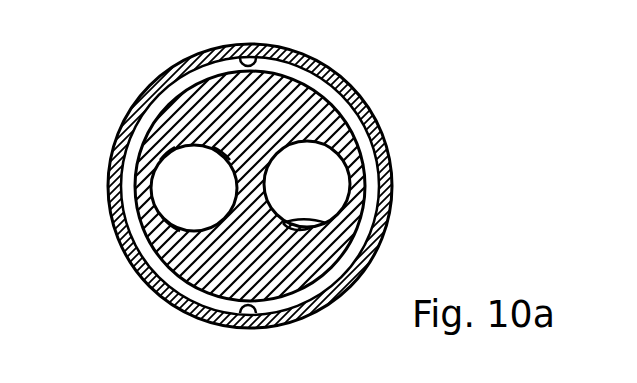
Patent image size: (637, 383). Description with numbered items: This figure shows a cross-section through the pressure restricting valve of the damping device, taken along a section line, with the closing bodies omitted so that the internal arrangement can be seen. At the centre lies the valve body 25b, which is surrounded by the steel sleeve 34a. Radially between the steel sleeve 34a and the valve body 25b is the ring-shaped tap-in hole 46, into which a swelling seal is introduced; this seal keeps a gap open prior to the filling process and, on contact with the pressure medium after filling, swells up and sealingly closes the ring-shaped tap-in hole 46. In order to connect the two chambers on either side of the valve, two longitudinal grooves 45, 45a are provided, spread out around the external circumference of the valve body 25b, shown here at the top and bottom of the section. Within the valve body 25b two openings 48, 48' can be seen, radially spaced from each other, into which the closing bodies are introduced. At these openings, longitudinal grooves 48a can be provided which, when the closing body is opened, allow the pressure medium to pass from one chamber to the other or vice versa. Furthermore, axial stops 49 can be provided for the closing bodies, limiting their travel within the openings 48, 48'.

The valve body 25b is at (310, 85).
The steel sleeve 34a is at (387, 160).
The ring-shaped tap-in hole 46 is at (368, 110).
The opening 48 is at (355, 184).
The opening 48' is at (140, 188).
The longitudinal groove 48a is at (177, 242).
The axial stop 49 is at (180, 148).
The longitudinal groove 45 is at (240, 307).
The longitudinal groove 45a is at (262, 52).